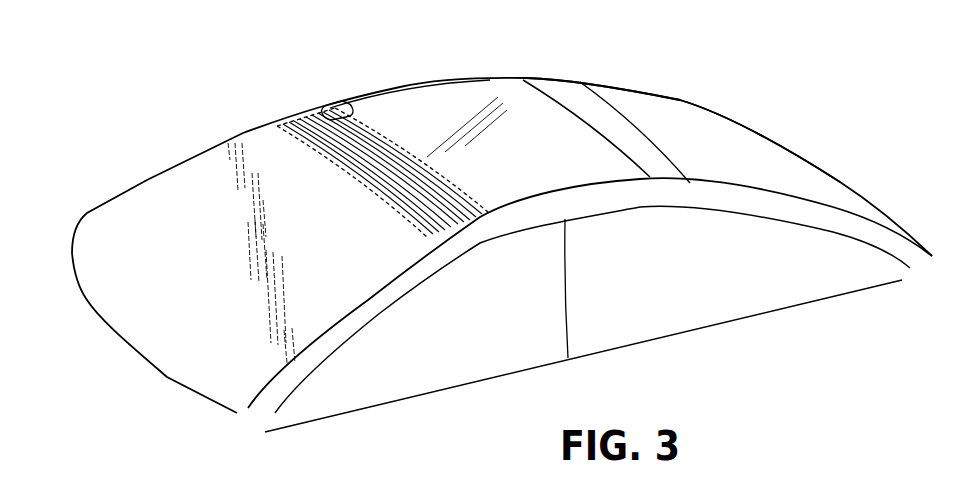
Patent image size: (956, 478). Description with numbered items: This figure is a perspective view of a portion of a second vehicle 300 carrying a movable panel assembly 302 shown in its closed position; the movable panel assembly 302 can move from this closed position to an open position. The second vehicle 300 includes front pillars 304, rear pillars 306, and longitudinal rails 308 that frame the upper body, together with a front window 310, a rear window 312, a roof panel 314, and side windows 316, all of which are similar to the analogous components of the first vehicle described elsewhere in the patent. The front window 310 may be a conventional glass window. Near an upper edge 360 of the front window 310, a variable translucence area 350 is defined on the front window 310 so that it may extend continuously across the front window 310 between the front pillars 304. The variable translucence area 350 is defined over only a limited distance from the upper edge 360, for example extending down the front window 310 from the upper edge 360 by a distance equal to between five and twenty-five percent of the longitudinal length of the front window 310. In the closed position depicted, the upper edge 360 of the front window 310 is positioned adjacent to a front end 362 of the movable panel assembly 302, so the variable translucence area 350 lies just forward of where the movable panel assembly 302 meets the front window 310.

The second vehicle 300 is at (168, 100).
The movable panel assembly 302 is at (373, 90).
The front pillars 304 is at (147, 180).
The rear pillars 306 is at (633, 93).
The longitudinal rails 308 is at (493, 77).
The front window 310 is at (153, 337).
The rear window 312 is at (708, 137).
The roof panel 314 is at (553, 103).
The side windows 316 is at (403, 387).
The variable translucence area 350 is at (387, 188).
The upper edge 360 is at (320, 106).
The front end 362 is at (368, 120).